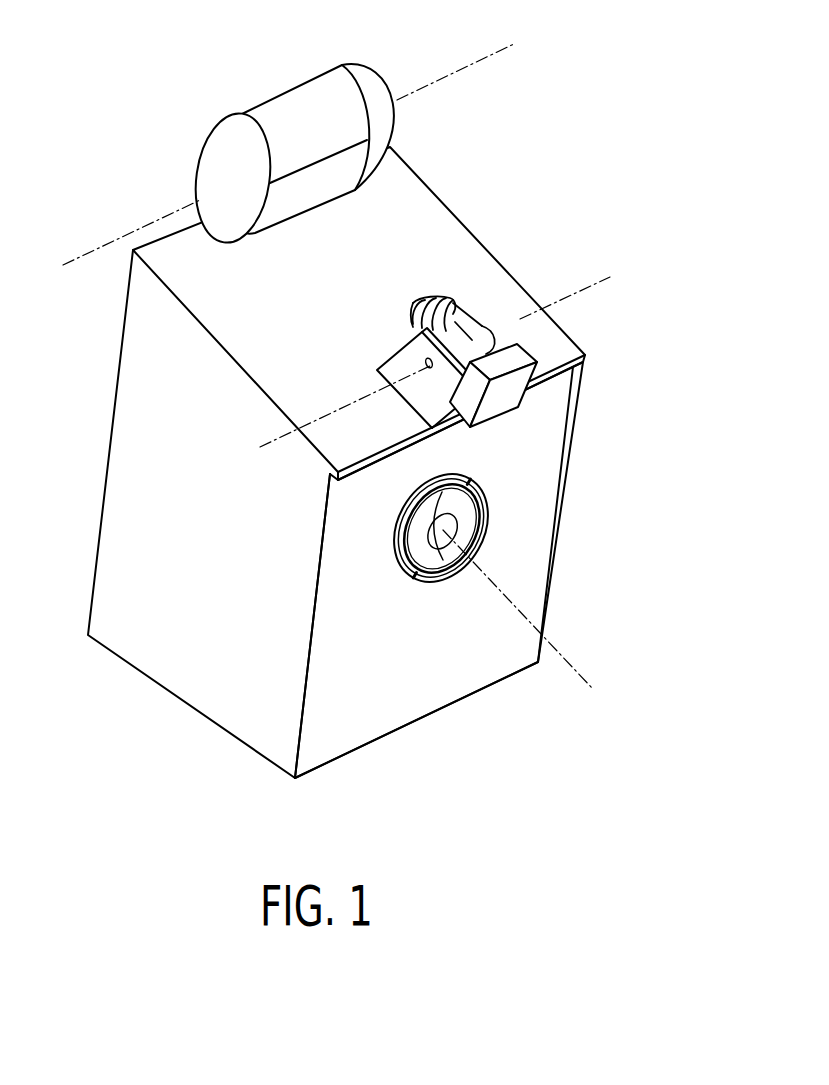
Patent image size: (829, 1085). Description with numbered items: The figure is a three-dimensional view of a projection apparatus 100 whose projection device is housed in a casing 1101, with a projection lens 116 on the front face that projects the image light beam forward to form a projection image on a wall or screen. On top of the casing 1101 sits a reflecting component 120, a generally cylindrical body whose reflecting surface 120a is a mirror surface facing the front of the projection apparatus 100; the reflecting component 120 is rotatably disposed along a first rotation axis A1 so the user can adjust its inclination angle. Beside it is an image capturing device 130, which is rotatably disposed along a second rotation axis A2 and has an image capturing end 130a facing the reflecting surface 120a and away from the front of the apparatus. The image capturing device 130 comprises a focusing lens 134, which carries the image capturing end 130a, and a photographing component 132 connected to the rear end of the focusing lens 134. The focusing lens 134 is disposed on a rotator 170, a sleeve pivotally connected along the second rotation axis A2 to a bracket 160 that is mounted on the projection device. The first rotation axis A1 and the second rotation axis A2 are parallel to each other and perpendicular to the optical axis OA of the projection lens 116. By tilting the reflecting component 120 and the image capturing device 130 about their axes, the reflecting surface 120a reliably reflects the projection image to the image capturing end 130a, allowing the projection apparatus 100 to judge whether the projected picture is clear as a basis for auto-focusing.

The projection apparatus 100 is at (371, 462).
The casing 1101 is at (547, 440).
The projection lens 116 is at (462, 503).
The reflecting component 120 is at (277, 125).
The reflecting surface 120a is at (334, 111).
The image capturing device 130 is at (534, 288).
The image capturing end 130a is at (423, 300).
The photographing component 132 is at (520, 352).
The focusing lens 134 is at (433, 297).
The bracket 160 is at (400, 364).
The rotator 170 is at (467, 332).
The first rotation axis A1 is at (133, 230).
The second rotation axis A2 is at (280, 437).
The optical axis OA is at (568, 661).